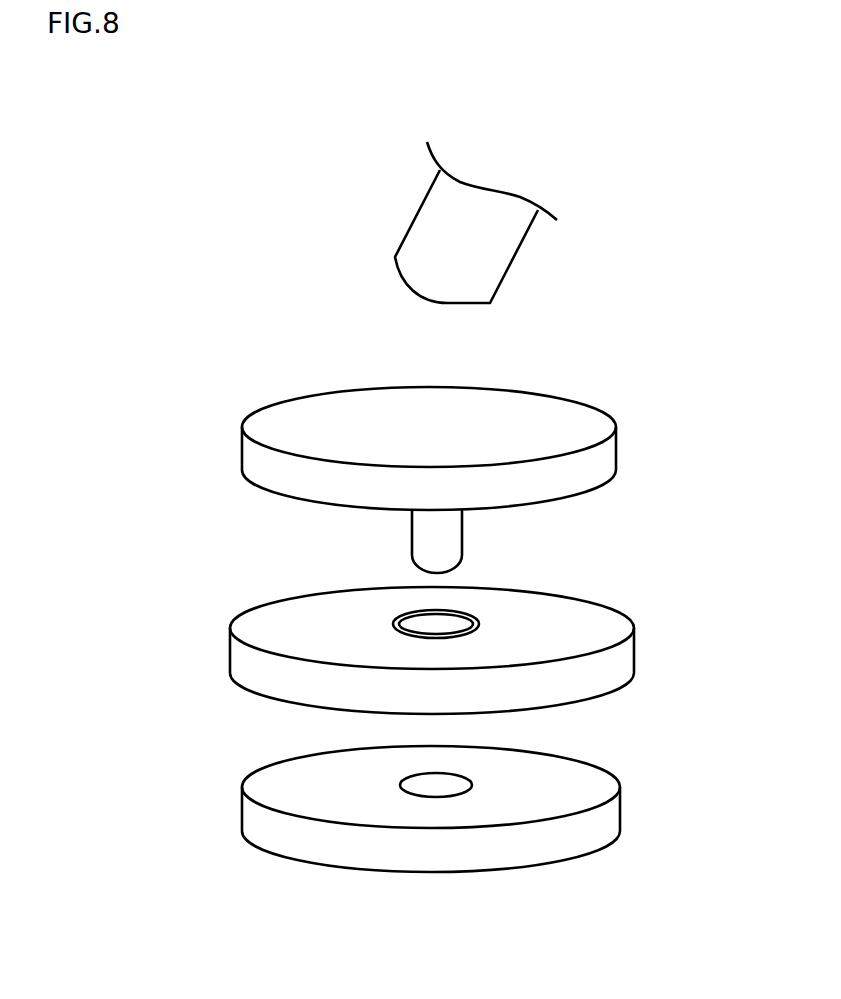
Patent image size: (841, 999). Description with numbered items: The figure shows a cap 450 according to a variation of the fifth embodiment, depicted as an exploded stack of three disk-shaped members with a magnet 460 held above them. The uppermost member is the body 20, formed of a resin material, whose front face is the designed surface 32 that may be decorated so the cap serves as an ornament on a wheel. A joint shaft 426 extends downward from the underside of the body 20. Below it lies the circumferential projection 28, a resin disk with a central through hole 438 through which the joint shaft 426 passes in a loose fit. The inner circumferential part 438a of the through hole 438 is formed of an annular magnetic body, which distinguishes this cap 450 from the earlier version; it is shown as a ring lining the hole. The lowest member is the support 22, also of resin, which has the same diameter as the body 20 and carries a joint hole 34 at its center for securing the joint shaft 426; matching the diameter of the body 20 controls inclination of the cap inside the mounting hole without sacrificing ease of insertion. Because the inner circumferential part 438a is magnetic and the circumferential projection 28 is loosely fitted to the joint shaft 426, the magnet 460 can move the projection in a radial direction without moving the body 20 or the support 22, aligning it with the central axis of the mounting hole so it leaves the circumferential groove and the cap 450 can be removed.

The magnet 460 is at (485, 253).
The body 20 is at (600, 462).
The designed surface 32 is at (487, 403).
The joint shaft 426 is at (448, 543).
The circumferential projection 28 is at (608, 660).
The through hole 438 is at (458, 612).
The inner circumferential part 438a is at (482, 623).
The support 22 is at (605, 816).
The joint hole 34 is at (472, 785).
The cap 450 is at (431, 905).